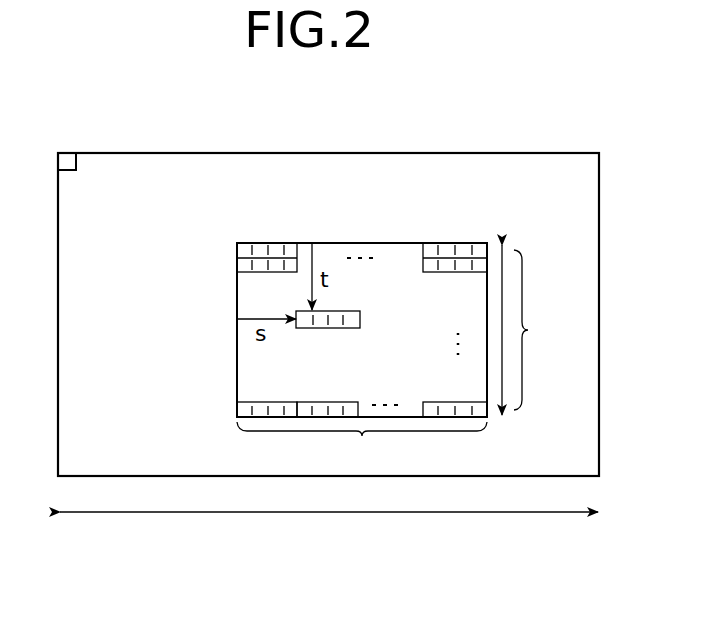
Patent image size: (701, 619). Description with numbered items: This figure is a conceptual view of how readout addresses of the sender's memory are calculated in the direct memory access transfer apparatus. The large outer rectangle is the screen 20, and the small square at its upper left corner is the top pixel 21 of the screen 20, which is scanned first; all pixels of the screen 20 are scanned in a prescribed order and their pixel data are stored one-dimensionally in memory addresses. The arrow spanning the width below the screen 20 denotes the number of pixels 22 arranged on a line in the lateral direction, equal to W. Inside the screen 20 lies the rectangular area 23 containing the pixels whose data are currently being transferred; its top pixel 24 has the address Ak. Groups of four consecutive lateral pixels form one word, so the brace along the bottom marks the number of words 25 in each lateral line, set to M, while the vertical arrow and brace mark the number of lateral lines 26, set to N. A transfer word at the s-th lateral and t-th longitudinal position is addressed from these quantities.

The screen 20 is at (470, 152).
The top pixel of the screen 21 is at (66, 152).
The number of pixels on a line in the lateral direction 22 is at (190, 514).
The rectangular area 23 is at (350, 242).
The top pixel of the rectangular area 24 is at (237, 254).
The number of words in each lateral line of the rectangular area 25 is at (424, 432).
The number of lateral lines of the rectangular area 26 is at (502, 288).